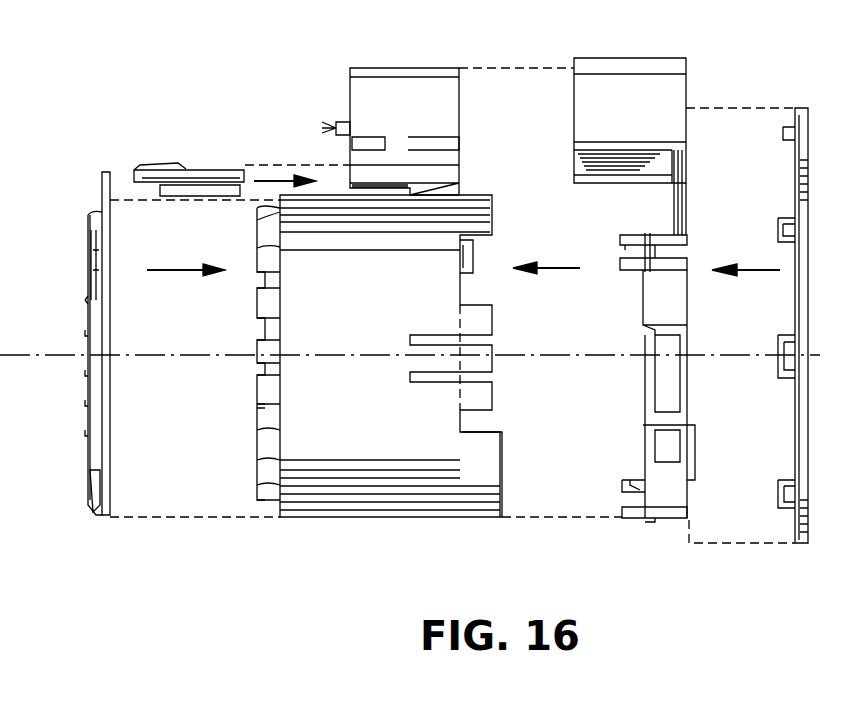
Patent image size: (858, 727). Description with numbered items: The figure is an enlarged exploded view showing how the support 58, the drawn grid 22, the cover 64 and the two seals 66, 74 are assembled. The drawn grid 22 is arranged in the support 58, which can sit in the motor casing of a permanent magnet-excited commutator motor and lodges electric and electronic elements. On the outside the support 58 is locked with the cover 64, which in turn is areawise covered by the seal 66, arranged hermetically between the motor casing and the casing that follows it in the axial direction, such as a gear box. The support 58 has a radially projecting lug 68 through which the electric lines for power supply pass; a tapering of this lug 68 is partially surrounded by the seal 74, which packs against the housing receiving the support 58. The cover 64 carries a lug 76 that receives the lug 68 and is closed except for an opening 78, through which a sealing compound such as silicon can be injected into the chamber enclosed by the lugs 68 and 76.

The drawn grid 22 is at (92, 216).
The support 58 is at (380, 508).
The cover 64 is at (687, 190).
The seal 66 is at (805, 270).
The lug 68 is at (397, 85).
The seal 74 is at (205, 176).
The lug 76 is at (620, 90).
The opening 78 is at (335, 122).